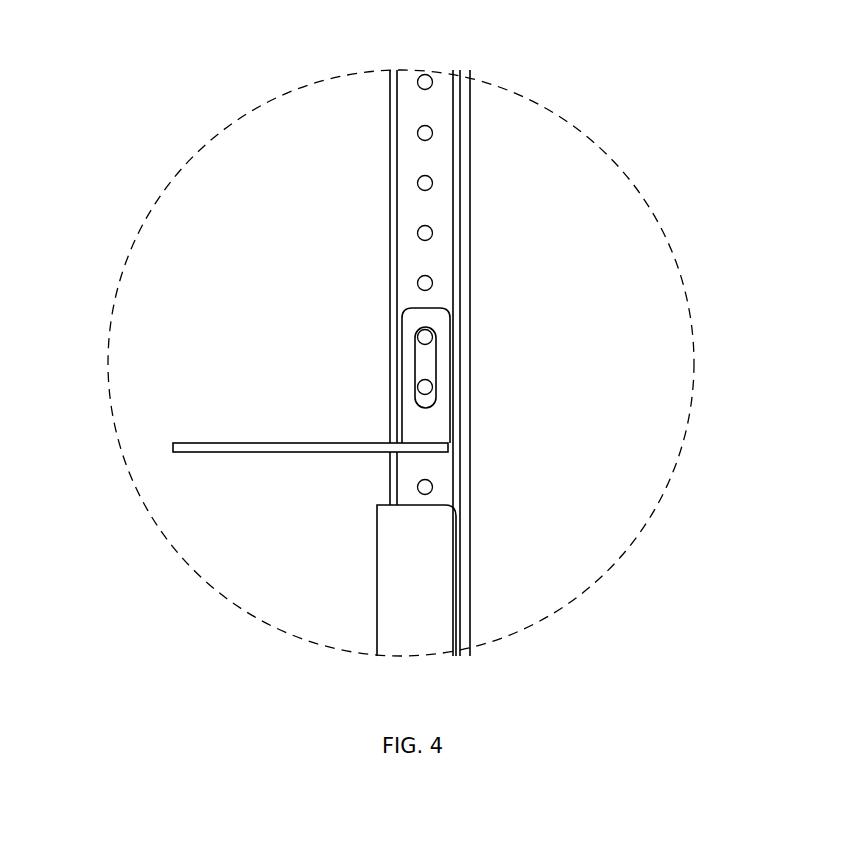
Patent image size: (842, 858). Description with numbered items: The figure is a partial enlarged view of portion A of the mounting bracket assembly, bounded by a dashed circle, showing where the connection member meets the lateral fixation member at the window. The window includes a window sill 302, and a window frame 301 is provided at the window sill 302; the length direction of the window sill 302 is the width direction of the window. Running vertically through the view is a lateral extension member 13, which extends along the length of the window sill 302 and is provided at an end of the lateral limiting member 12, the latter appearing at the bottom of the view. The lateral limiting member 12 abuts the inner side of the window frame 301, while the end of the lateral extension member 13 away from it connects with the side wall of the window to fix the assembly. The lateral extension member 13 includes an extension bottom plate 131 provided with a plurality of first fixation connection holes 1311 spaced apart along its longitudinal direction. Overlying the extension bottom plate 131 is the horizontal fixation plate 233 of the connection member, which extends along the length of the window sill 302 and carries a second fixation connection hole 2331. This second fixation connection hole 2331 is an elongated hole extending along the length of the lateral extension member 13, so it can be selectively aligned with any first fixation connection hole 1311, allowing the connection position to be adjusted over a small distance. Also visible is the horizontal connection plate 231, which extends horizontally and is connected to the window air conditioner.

The lateral limiting member 12 is at (405, 585).
The lateral extension member 13 is at (435, 107).
The extension bottom plate 131 is at (420, 155).
The first fixation connection hole 1311 is at (425, 232).
The horizontal connection plate 231 is at (210, 452).
The horizontal fixation plate 233 is at (408, 316).
The second fixation connection hole 2331 is at (428, 368).
The window frame 301 is at (567, 198).
The window sill 302 is at (153, 288).
The portion A is at (578, 594).